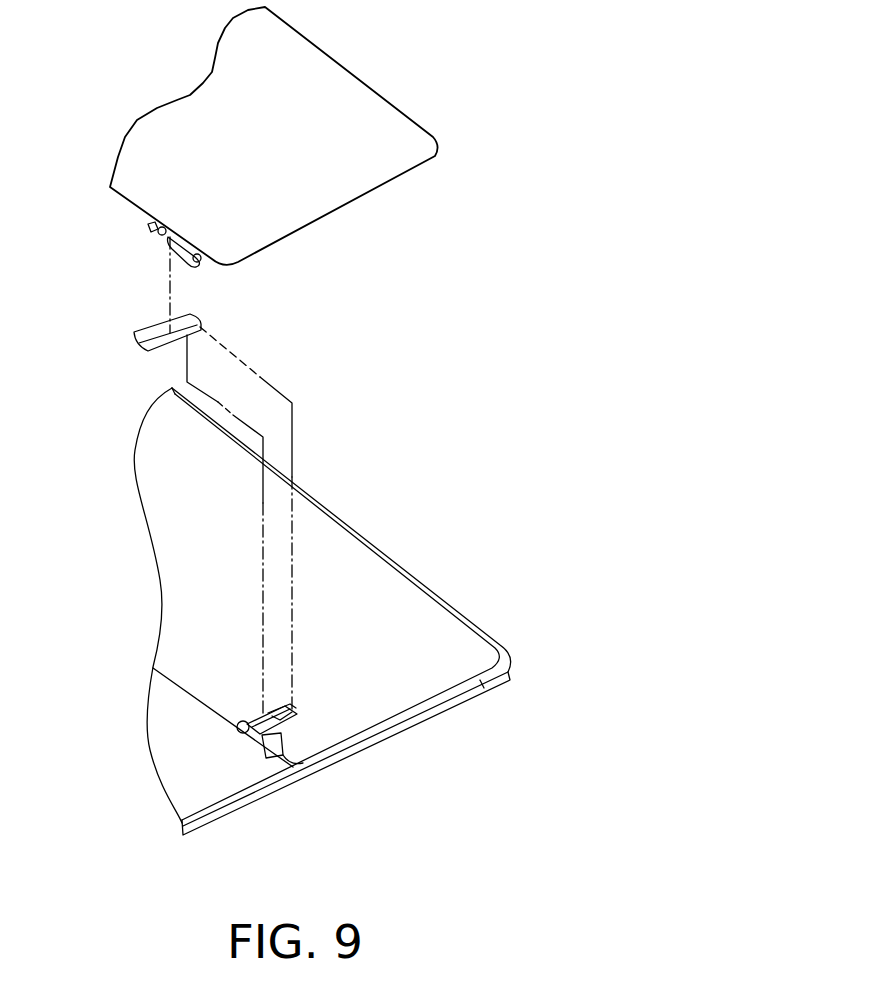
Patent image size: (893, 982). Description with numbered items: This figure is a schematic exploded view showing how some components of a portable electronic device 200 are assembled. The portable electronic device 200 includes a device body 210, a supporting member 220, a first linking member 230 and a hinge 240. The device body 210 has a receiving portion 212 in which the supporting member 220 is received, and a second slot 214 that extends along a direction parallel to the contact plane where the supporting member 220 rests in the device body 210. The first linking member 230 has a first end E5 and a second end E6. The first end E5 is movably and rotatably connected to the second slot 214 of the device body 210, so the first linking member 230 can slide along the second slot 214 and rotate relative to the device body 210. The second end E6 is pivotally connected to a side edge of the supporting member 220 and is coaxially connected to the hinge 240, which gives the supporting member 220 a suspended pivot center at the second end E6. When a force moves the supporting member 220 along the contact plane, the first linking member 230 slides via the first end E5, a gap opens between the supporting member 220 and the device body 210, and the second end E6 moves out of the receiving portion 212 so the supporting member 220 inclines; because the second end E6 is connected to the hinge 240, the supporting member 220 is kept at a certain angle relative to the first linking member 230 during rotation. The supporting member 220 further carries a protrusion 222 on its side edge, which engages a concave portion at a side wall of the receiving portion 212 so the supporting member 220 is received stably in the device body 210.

The portable electronic device 200 is at (677, 85).
The device body 210 is at (248, 797).
The receiving portion 212 is at (440, 632).
The second slot 214 is at (280, 722).
The supporting member 220 is at (317, 60).
The protrusion 222 is at (148, 231).
The first linking member 230 is at (146, 329).
The hinge 240 is at (186, 242).
The first end E5 is at (195, 318).
The second end E6 is at (137, 344).